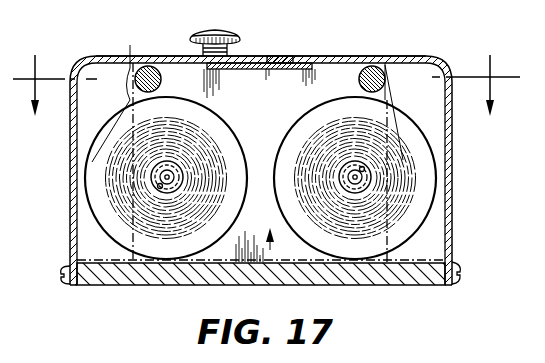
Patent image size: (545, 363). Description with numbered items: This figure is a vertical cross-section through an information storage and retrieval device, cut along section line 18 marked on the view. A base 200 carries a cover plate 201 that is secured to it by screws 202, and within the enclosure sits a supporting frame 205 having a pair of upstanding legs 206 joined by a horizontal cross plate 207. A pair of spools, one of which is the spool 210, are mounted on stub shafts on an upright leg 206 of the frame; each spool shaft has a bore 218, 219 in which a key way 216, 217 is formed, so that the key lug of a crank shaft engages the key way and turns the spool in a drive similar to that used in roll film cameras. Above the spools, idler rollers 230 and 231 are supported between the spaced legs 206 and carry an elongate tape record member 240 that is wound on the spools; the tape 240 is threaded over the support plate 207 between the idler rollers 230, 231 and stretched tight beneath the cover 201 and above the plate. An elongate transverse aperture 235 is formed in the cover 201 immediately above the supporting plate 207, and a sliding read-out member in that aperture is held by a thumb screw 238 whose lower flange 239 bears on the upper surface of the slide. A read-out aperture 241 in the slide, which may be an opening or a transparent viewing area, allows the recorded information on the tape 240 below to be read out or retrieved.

The section line 18- 18 is at (267, 84).
The base 200 is at (398, 275).
The cover plate 201 is at (450, 245).
The screws 202 is at (458, 268).
The supporting frame 205 is at (270, 250).
The upstanding legs 206 is at (236, 242).
The cross plate 207 is at (262, 69).
The spool 210 is at (418, 229).
The key way 216 is at (366, 170).
The key way 217 is at (156, 171).
The bore 218 is at (366, 181).
The bore 219 is at (160, 189).
The idler roller 230 is at (359, 79).
The idler roller 231 is at (161, 80).
The transverse aperture 235 is at (289, 56).
The thumb screw 238 is at (201, 32).
The flange 239 is at (204, 52).
The tape record member 240 is at (130, 50).
The read-out aperture 241 is at (268, 57).